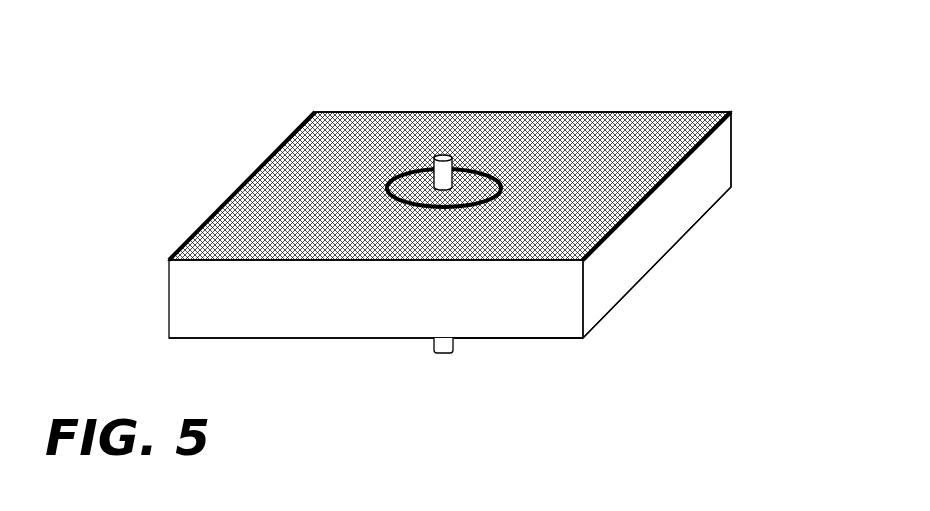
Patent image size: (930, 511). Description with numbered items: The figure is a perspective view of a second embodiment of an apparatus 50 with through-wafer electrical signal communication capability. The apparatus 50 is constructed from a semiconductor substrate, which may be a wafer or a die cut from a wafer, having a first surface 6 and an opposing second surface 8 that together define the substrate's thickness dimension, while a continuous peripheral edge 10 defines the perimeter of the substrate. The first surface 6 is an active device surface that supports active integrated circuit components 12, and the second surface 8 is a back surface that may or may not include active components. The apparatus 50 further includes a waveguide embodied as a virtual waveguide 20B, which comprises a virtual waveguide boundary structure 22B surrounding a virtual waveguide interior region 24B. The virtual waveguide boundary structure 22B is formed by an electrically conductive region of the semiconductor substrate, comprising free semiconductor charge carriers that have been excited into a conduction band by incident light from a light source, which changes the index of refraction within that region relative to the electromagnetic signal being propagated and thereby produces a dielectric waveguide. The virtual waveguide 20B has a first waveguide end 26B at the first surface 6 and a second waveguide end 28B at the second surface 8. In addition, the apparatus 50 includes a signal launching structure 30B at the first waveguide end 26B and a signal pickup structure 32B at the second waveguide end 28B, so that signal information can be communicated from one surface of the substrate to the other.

The apparatus 50 is at (200, 72).
The first surface 6 is at (688, 127).
The active integrated circuit components 12 is at (258, 186).
The continuous peripheral edge 10 is at (663, 220).
The second surface 8 is at (388, 340).
The virtual waveguide 20B is at (512, 167).
The first waveguide end 26B is at (417, 194).
The virtual waveguide interior region 24B is at (478, 190).
The virtual waveguide boundary structure 22B is at (407, 200).
The signal launching structure 30B is at (443, 158).
The signal pickup structure 32B is at (445, 353).
The second waveguide end 28B is at (472, 345).